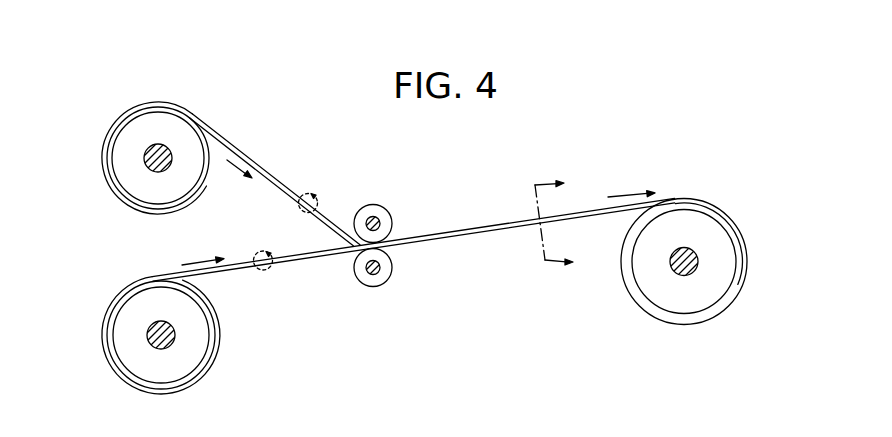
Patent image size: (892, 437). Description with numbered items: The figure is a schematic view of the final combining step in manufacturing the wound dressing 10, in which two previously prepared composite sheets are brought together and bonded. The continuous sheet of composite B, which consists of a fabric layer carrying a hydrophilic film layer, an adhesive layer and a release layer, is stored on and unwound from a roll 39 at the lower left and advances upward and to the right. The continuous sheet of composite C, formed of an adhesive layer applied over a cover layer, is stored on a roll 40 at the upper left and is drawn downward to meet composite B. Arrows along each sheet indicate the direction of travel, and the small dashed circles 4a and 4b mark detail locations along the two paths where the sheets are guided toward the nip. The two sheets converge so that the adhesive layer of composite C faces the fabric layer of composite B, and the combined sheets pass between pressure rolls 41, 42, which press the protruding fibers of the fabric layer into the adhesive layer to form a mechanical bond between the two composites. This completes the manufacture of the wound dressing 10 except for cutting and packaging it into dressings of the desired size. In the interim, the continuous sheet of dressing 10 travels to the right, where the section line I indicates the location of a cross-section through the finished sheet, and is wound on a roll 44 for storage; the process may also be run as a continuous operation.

The wound dressing 10 is at (468, 223).
The roll 39 is at (135, 357).
The roll 40 is at (140, 182).
The pressure roll 41 is at (378, 210).
The pressure roll 42 is at (383, 272).
The roll 44 is at (713, 247).
The guide roller 4a is at (326, 198).
The guide roller 4b is at (252, 251).
The composite B is at (221, 282).
The composite C is at (233, 136).
The section line I- I is at (576, 167).